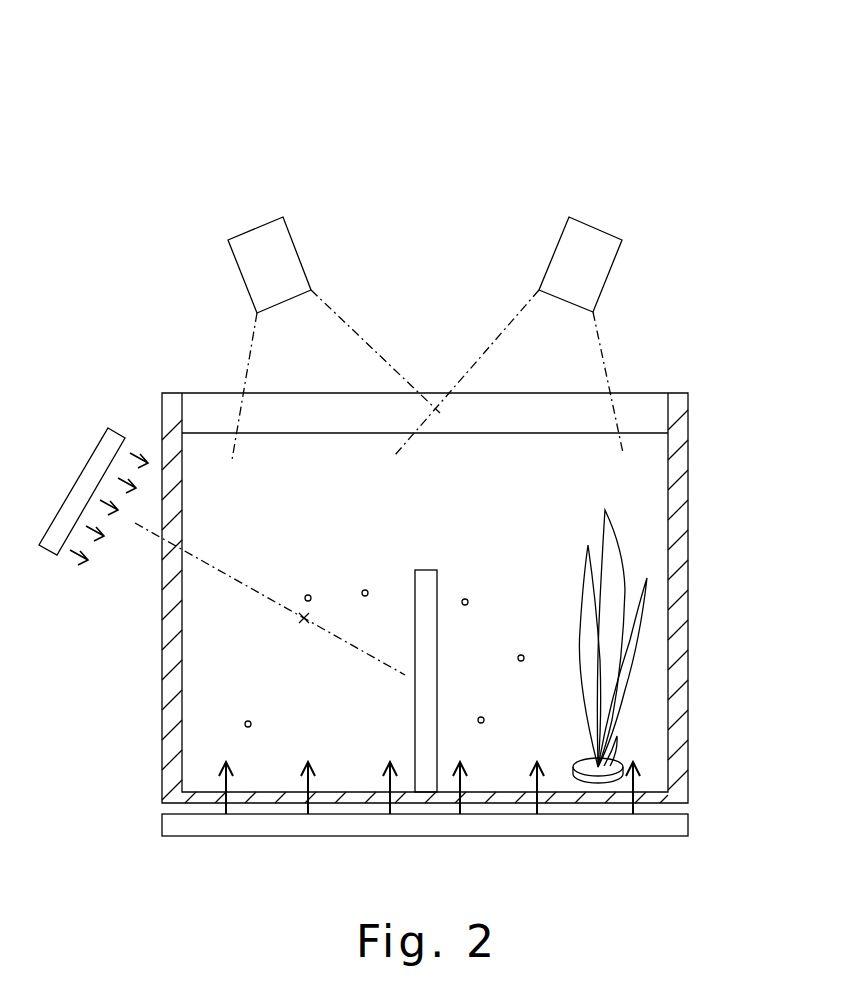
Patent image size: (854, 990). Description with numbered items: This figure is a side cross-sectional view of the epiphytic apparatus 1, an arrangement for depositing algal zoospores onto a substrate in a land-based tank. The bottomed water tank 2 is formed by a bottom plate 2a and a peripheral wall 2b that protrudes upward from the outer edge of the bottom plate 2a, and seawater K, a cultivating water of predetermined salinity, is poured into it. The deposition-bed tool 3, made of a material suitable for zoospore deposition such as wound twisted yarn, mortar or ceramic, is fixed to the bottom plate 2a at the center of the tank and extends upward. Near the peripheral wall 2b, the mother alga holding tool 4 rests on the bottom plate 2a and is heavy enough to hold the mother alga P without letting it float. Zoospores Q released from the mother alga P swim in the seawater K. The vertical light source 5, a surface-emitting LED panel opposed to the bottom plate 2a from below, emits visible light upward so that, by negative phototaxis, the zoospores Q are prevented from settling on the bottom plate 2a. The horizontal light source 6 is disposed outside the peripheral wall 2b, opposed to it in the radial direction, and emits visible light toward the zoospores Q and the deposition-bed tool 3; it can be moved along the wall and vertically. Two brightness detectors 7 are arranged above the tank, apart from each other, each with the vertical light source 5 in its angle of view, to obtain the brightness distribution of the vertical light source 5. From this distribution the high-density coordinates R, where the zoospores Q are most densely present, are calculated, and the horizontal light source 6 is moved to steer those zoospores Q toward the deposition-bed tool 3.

The epiphytic apparatus 1 is at (701, 75).
The bottomed water tank 2 is at (691, 392).
The bottom plate 2a is at (658, 792).
The peripheral wall 2b is at (683, 520).
The deposition-bed tool 3 is at (426, 584).
The mother alga holding tool 4 is at (585, 757).
The vertical light source 5 is at (688, 829).
The horizontal light source 6 is at (97, 462).
The brightness detector 7 is at (285, 232).
The seawater K is at (248, 487).
The mother alga P is at (567, 547).
The zoospores Q is at (310, 595).
The high-density coordinates R is at (297, 618).